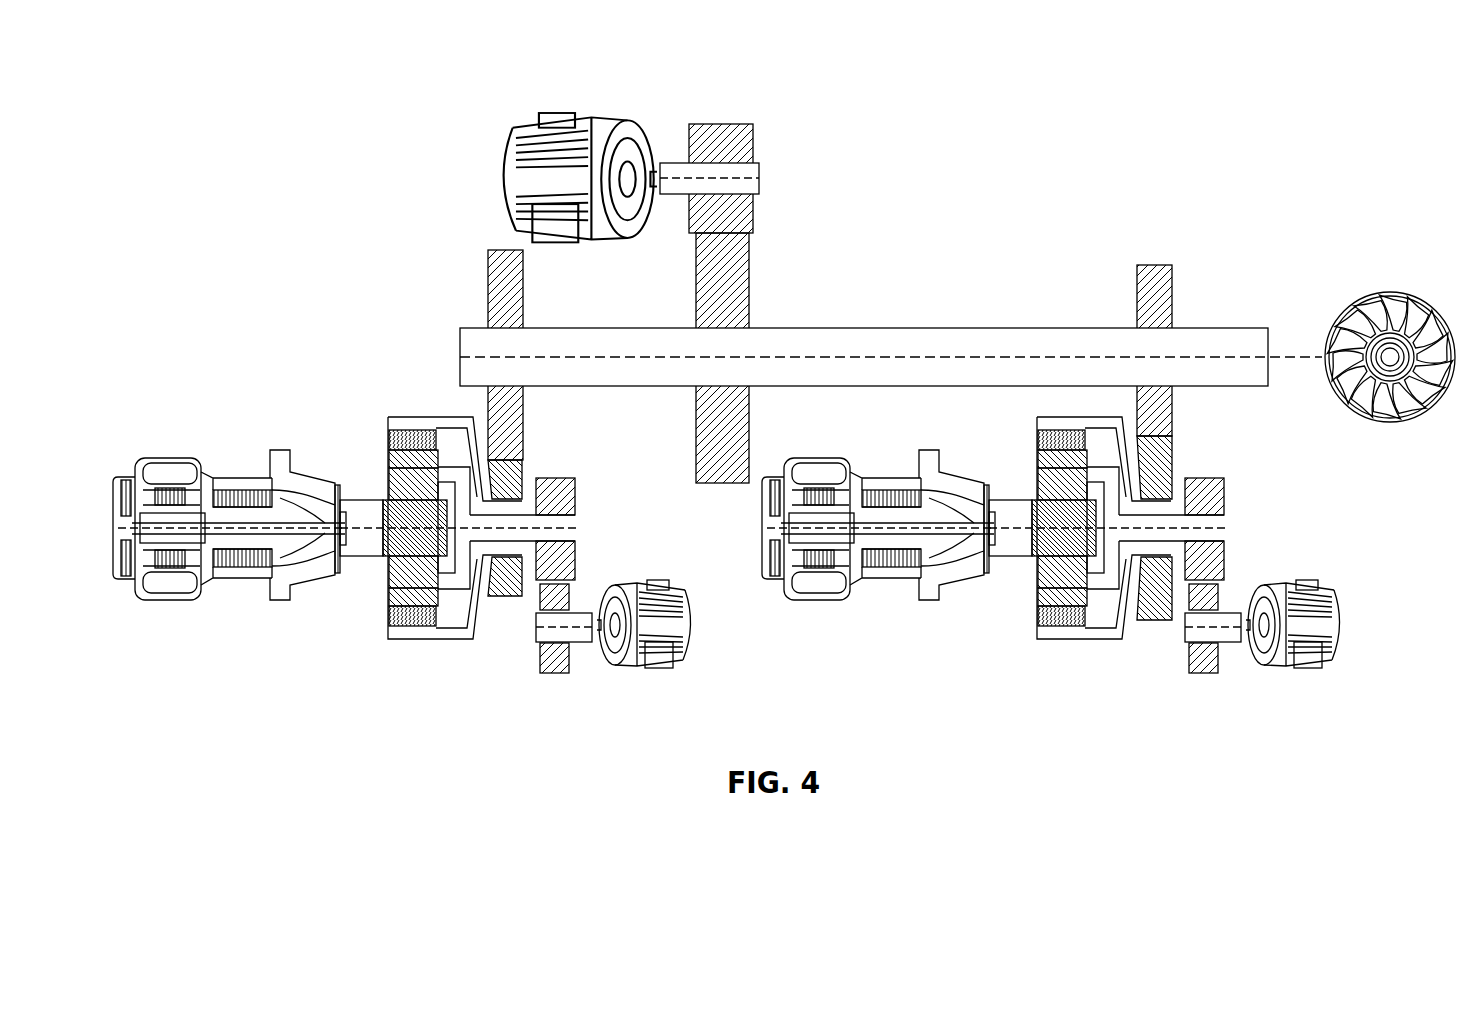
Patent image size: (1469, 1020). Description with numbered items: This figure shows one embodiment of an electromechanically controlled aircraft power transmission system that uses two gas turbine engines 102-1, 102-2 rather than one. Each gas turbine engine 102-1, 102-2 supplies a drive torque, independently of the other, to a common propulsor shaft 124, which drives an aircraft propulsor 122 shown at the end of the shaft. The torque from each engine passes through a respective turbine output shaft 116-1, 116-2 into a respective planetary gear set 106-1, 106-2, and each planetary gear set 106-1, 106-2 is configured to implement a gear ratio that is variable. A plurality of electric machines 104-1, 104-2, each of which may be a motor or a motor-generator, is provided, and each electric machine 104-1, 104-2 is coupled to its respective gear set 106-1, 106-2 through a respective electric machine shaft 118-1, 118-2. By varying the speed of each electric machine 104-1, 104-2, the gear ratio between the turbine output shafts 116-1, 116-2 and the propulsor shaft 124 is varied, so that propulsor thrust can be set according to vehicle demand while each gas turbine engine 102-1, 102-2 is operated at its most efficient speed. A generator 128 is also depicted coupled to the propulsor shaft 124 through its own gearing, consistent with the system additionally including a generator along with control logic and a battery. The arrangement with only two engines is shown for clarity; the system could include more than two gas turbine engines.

The gas turbine engine 102-1 is at (879, 622).
The gas turbine engine 102-2 is at (224, 434).
The electric machine 104-1 is at (1321, 653).
The electric machine 104-2 is at (673, 653).
The planetary gear set 106-1 is at (1086, 558).
The planetary gear set 106-2 is at (437, 558).
The turbine output shaft 116-1 is at (1001, 556).
The turbine output shaft 116-2 is at (352, 556).
The electric machine shaft 118-1 is at (1222, 636).
The electric machine shaft 118-2 is at (573, 636).
The aircraft propulsor 122 is at (1390, 293).
The propulsor shaft 124 is at (947, 327).
The generator 128 is at (563, 113).